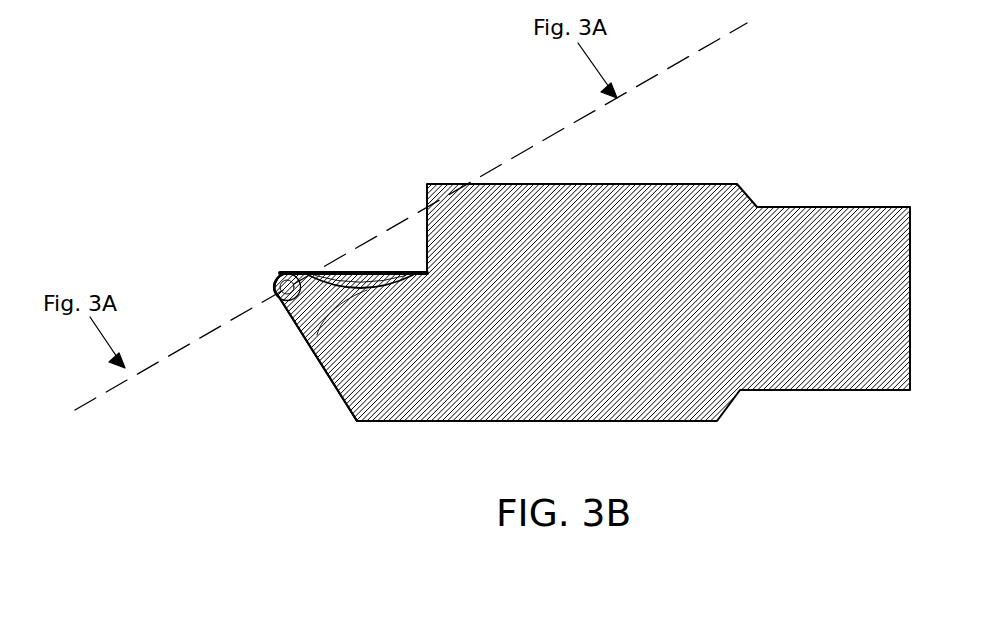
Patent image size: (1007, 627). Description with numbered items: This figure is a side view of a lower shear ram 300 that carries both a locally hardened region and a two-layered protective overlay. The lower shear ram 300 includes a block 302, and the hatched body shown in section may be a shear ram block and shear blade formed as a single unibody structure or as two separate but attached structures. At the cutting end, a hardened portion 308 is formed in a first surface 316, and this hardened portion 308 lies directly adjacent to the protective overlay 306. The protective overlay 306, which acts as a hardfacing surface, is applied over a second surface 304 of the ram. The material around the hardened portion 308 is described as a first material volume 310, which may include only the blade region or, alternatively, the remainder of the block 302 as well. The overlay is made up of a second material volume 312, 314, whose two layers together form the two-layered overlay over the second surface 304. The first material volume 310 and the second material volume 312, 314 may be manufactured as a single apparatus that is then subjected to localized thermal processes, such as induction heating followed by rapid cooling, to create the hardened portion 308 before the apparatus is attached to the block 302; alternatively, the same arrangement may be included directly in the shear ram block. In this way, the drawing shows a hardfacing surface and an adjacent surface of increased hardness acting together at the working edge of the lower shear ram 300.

The lower shear ram 300 is at (562, 246).
The block 302 is at (700, 184).
The second surface 304 is at (317, 335).
The protective overlay 306 is at (381, 271).
The hardened portion 308 is at (278, 274).
The first material volume 310 is at (292, 312).
The second material volume 312 is at (312, 272).
The second material volume 314 is at (358, 271).
The first surface 316 is at (296, 272).